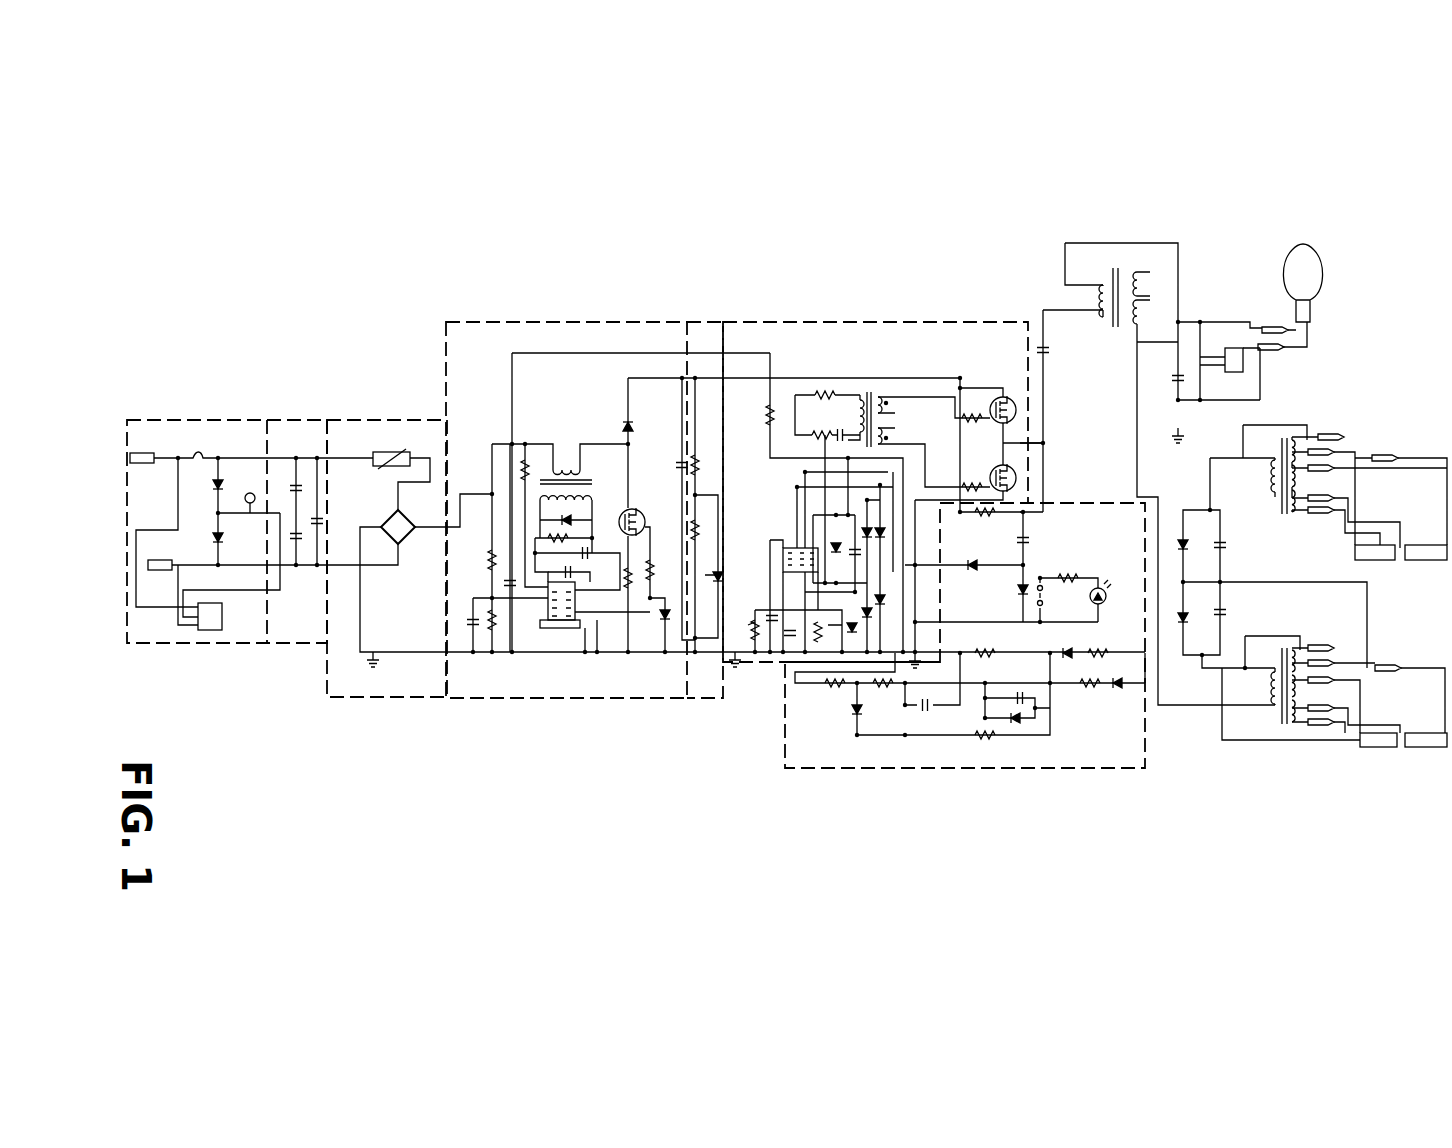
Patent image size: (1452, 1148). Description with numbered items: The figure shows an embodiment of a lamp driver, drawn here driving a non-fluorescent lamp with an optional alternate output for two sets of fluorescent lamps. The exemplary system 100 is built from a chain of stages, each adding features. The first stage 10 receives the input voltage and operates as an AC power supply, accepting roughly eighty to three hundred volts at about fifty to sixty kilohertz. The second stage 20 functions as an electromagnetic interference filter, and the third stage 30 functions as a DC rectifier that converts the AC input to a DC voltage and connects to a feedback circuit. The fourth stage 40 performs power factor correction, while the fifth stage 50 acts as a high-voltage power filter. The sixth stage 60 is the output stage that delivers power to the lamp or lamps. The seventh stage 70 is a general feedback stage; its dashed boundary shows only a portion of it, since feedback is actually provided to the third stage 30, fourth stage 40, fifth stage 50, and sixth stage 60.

The system 100 is at (480, 163).
The first stage 10 is at (206, 400).
The second stage 20 is at (302, 400).
The third stage 30 is at (406, 400).
The fourth stage 40 is at (585, 302).
The fifth stage 50 is at (705, 300).
The sixth stage 60 is at (950, 300).
The seventh stage 70 is at (1030, 796).